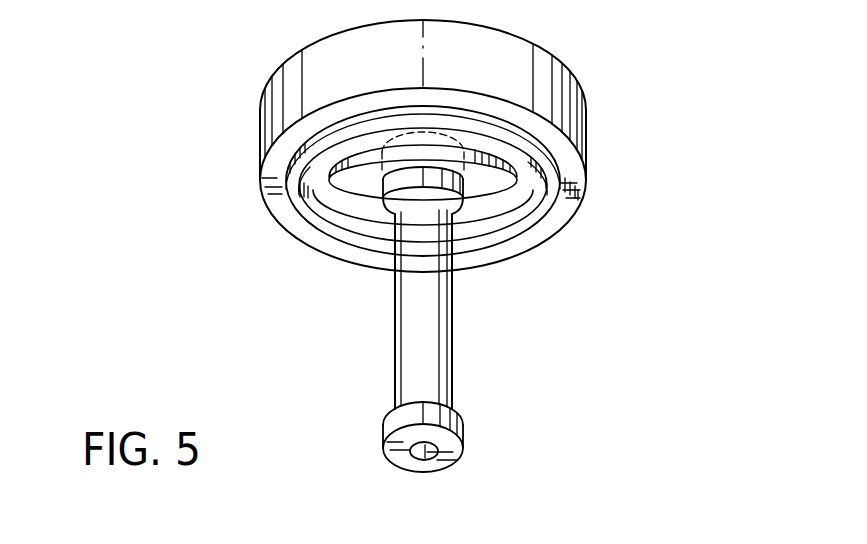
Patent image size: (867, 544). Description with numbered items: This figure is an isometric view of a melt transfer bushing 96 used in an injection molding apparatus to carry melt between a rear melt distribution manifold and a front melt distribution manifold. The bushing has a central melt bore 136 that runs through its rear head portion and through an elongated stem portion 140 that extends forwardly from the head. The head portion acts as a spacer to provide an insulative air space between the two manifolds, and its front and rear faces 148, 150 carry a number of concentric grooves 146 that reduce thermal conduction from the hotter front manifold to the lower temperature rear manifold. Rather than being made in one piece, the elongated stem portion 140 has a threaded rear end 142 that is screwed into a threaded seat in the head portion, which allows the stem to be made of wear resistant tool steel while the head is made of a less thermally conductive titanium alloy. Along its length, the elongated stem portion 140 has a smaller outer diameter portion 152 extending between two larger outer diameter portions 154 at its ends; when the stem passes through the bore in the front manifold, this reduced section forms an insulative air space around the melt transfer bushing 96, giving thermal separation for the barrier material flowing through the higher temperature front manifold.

The melt transfer bushing 96 is at (207, 152).
The central melt bore 136 is at (420, 458).
The elongated stem portion 140 is at (437, 357).
The threaded rear end 142 is at (447, 140).
The concentric grooves 146 is at (330, 215).
The front face 148 is at (526, 248).
The rear face 150 is at (513, 33).
The smaller outer diameter portion 152 is at (423, 323).
The larger outer diameter portions 154 is at (460, 186).